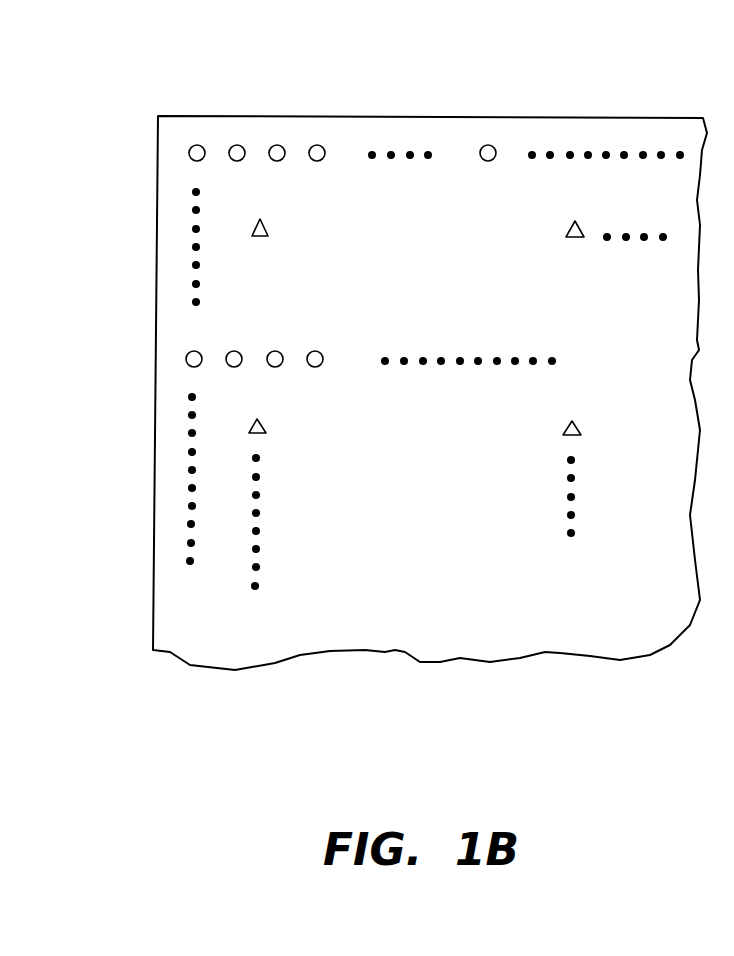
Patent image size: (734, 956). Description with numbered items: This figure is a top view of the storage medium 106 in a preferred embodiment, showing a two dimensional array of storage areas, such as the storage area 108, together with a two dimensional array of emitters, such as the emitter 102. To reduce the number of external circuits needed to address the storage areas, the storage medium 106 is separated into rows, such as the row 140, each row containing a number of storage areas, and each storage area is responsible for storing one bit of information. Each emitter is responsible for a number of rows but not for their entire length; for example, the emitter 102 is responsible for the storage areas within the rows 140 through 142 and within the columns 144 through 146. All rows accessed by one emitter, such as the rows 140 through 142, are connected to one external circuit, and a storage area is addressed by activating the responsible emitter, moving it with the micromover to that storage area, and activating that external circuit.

The field emitter 102 is at (272, 224).
The storage medium 106 is at (627, 118).
The storage area 108 is at (191, 147).
The row 140 is at (358, 117).
The row 142 is at (180, 357).
The column 144 is at (197, 100).
The column 146 is at (488, 145).